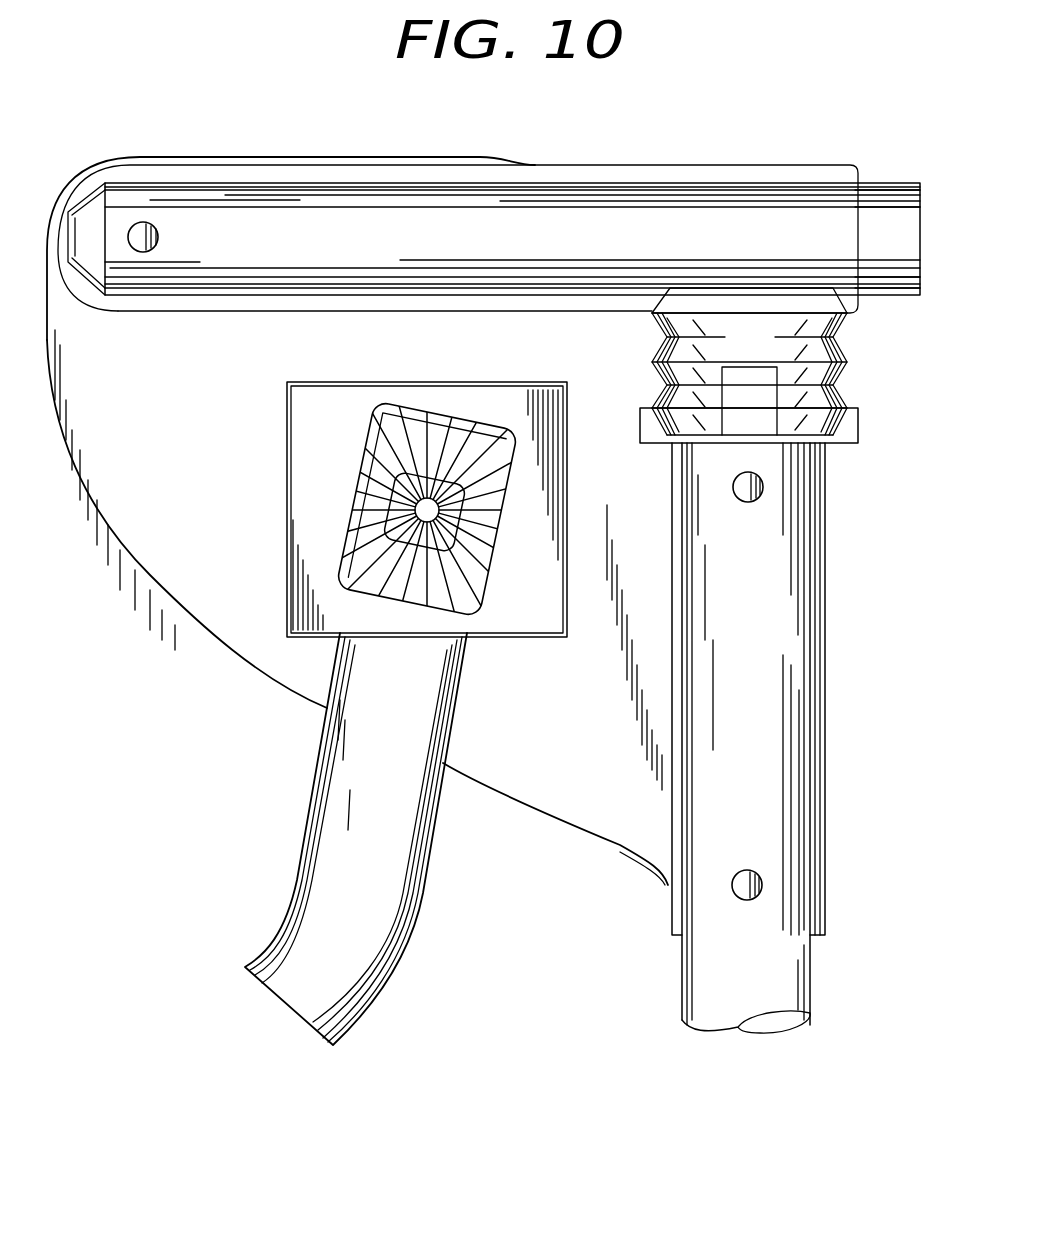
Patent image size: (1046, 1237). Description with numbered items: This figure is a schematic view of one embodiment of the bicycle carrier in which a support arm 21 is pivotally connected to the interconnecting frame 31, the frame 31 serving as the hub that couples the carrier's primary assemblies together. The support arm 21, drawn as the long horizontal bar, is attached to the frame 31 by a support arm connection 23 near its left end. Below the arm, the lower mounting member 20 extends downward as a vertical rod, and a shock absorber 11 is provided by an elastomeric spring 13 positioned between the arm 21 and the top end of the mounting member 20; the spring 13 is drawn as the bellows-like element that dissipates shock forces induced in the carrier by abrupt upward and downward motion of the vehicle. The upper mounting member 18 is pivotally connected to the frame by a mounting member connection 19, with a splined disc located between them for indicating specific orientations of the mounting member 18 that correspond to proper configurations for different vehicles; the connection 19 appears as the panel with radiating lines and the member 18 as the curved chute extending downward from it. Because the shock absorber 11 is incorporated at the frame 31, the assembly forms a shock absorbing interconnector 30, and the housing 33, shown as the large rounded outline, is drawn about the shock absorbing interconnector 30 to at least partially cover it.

The shock absorber 11 is at (626, 348).
The elastomeric spring 13 is at (769, 353).
The upper mounting member 18 is at (390, 925).
The mounting member connection 19 is at (503, 673).
The lower mounting member 20 is at (787, 992).
The support arm 21 is at (883, 295).
The support arm connection 23 is at (205, 236).
The shock absorbing interconnector 30 is at (161, 755).
The interconnecting frame 31 is at (219, 443).
The housing 33 is at (150, 582).